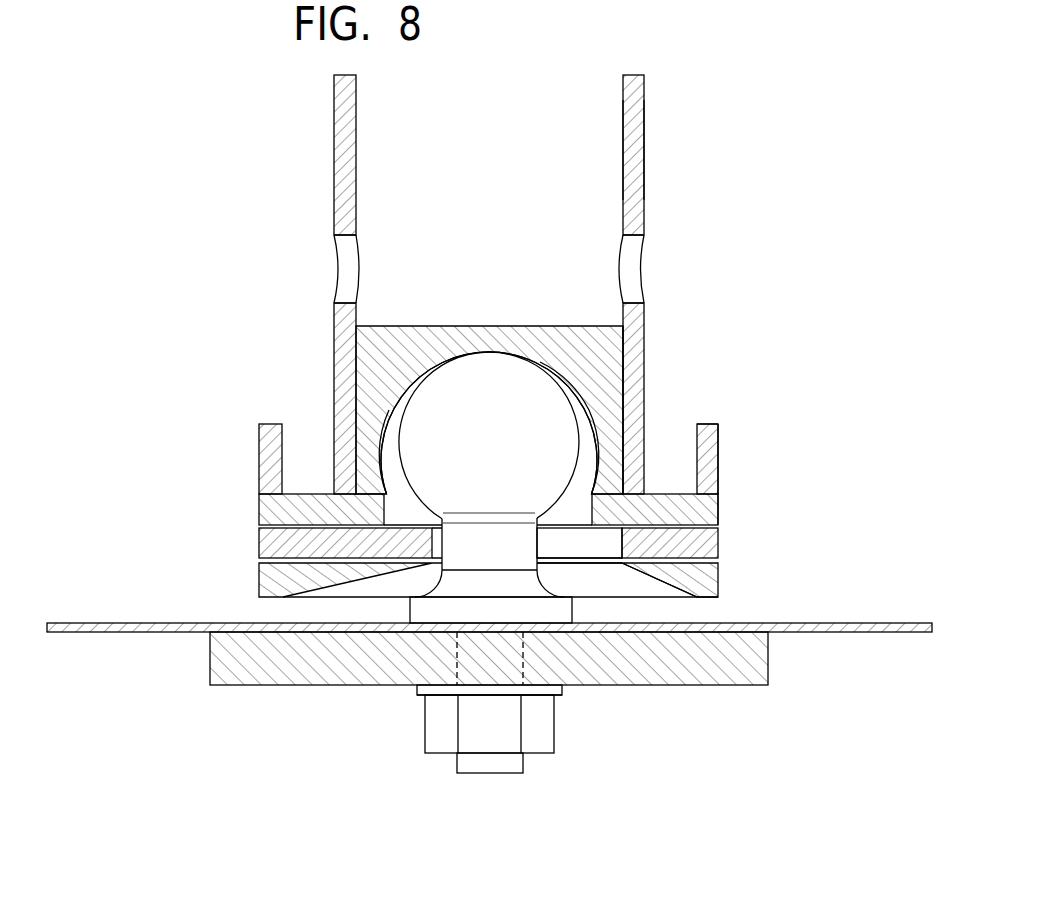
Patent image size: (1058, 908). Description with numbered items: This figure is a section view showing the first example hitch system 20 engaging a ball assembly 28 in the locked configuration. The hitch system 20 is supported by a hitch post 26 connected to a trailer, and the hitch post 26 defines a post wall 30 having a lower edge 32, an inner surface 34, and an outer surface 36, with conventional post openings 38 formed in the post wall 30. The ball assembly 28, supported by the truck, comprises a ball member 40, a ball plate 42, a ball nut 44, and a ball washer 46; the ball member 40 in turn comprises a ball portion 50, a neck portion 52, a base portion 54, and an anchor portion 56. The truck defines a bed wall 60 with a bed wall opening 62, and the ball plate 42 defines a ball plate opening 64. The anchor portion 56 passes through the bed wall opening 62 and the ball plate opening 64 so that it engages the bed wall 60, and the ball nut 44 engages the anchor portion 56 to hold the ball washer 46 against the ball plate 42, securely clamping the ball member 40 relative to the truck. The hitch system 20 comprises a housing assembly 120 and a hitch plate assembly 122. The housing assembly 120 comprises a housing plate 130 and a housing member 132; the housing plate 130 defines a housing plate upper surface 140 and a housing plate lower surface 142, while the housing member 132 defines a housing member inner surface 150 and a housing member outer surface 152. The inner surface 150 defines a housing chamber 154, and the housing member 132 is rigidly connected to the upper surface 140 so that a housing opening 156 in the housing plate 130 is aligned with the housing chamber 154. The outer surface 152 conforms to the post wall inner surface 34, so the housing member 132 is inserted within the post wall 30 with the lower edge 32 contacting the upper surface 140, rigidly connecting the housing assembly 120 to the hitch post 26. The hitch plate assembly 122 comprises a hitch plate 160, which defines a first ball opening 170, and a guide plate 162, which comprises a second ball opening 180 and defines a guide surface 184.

The hitch system 20 is at (766, 413).
The hitch post 26 is at (644, 103).
The ball assembly 28 is at (453, 783).
The post wall 30 is at (637, 140).
The lower edge 32 is at (633, 495).
The inner surface 34 is at (623, 177).
The outer surface 36 is at (644, 185).
The post openings 38 is at (347, 268).
The ball member 40 is at (507, 357).
The ball plate 42 is at (752, 670).
The ball nut 44 is at (545, 725).
The ball washer 46 is at (557, 691).
The ball portion 50 is at (450, 385).
The neck portion 52 is at (462, 545).
The base portion 54 is at (420, 614).
The anchor portion 56 is at (508, 763).
The bed wall 60 is at (813, 626).
The bed wall opening 62 is at (457, 627).
The ball plate opening 64 is at (457, 655).
The housing assembly 120 is at (740, 449).
The hitch plate assembly 122 is at (722, 476).
The housing plate 130 is at (305, 503).
The housing member 132 is at (463, 357).
The housing plate upper surface 140 is at (673, 494).
The housing plate lower surface 142 is at (703, 542).
The housing member inner surface 150 is at (572, 404).
The housing member outer surface 152 is at (625, 357).
The housing chamber 154 is at (587, 465).
The housing opening 156 is at (402, 505).
The hitch plate 160 is at (683, 548).
The guide plate 162 is at (702, 571).
The first ball opening 170 is at (597, 543).
The second ball opening 180 is at (578, 566).
The guide surface 184 is at (659, 580).